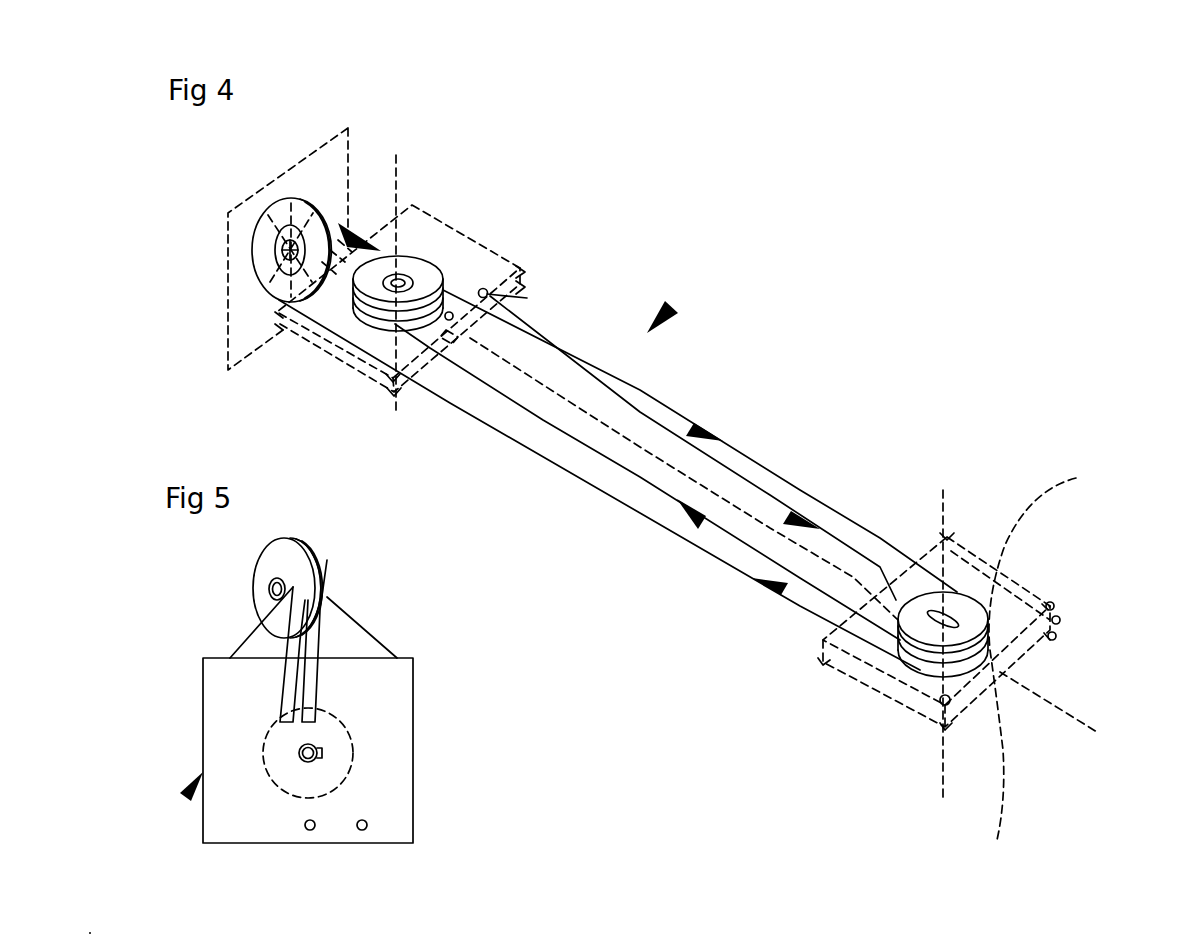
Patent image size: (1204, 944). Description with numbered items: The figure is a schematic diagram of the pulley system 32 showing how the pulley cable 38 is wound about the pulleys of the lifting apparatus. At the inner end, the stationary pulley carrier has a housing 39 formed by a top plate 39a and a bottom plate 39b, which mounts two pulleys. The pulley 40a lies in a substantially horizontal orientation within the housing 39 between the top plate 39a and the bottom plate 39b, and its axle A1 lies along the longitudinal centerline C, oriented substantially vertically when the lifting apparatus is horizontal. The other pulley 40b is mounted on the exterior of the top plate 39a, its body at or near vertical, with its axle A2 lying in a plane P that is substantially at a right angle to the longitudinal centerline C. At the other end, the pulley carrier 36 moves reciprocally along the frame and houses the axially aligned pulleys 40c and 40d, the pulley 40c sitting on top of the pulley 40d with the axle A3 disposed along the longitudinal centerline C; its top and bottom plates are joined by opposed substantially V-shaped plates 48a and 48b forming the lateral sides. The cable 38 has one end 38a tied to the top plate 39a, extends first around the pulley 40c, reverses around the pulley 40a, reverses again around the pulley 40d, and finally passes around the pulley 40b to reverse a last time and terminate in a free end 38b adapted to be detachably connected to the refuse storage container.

In FIG. 4, the plane P is at (297, 162).
In FIG. 4, the axle A1 is at (397, 408).
In FIG. 4, the axle A2 is at (247, 282).
In FIG. 4, the axle A3 is at (943, 491).
In FIG. 4, the longitudinal centerline C is at (1091, 728).
In FIG. 4, the pulley system 32 is at (662, 315).
In FIG. 4, the pulley carrier 36 is at (1018, 596).
In FIG. 4, the pulley cable 38 is at (677, 410).
In FIG. 4, the end 38a is at (527, 298).
In FIG. 4, the free end 38b is at (355, 220).
In FIG. 4, the housing 39 is at (482, 262).
In FIG. 5, the housing 39 is at (186, 797).
In FIG. 4, the top plate 39a is at (432, 225).
In FIG. 4, the bottom plate 39b is at (515, 268).
In FIG. 5, the bottom plate 39b is at (390, 717).
In FIG. 4, the pulley 40a is at (437, 272).
In FIG. 4, the pulley 40b is at (273, 229).
In FIG. 5, the pulley 40b is at (305, 533).
In FIG. 4, the pulley 40c is at (1052, 650).
In FIG. 4, the pulley 40d is at (994, 852).
In FIG. 4, the V-shaped plate 48a is at (1064, 630).
In FIG. 4, the V-shaped plate 48b is at (873, 667).